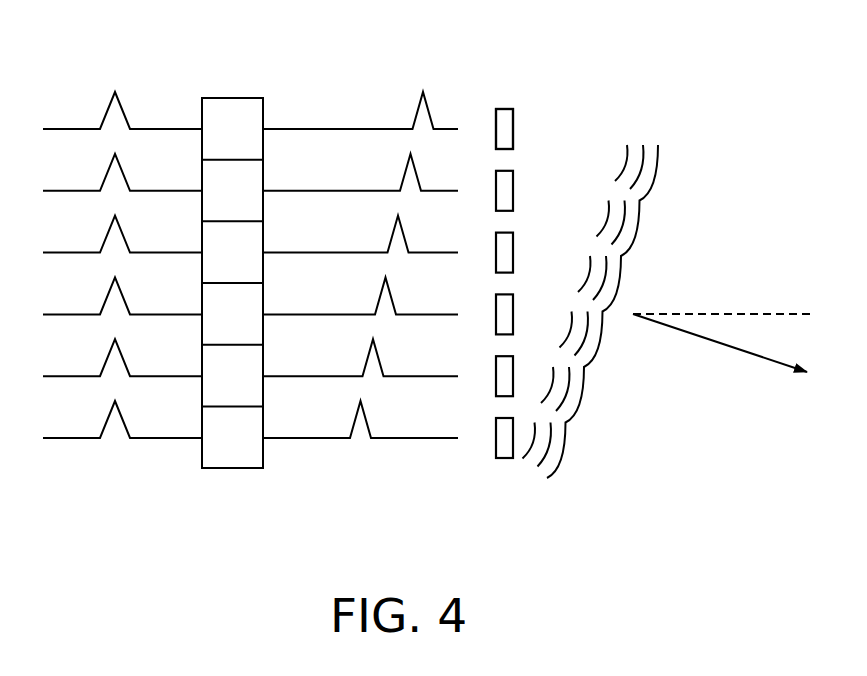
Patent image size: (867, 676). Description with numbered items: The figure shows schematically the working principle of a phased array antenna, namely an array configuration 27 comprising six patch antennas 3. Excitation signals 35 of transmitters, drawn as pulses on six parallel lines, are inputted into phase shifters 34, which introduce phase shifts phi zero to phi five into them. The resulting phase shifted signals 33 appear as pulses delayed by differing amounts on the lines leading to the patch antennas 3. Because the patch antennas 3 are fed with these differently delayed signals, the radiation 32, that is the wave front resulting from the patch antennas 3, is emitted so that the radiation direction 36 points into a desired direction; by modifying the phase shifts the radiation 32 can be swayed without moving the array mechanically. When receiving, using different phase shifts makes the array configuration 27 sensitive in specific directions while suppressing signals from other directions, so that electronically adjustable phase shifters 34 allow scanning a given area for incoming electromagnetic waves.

The patch antenna 3 is at (513, 134).
The array configuration 27 is at (508, 102).
The radiation 32 is at (670, 167).
The phase shifted signals 33 is at (335, 440).
The phase shifter 34 is at (228, 480).
The excitation signal 35 is at (70, 452).
The radiation direction 36 is at (742, 350).